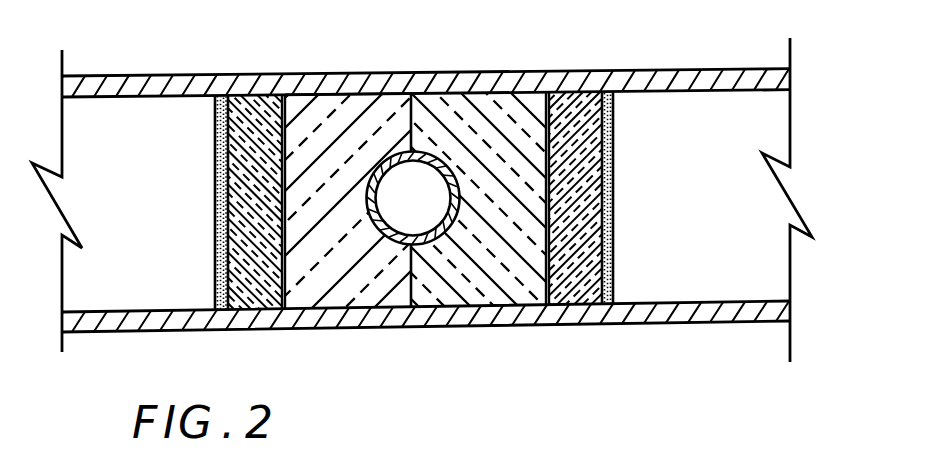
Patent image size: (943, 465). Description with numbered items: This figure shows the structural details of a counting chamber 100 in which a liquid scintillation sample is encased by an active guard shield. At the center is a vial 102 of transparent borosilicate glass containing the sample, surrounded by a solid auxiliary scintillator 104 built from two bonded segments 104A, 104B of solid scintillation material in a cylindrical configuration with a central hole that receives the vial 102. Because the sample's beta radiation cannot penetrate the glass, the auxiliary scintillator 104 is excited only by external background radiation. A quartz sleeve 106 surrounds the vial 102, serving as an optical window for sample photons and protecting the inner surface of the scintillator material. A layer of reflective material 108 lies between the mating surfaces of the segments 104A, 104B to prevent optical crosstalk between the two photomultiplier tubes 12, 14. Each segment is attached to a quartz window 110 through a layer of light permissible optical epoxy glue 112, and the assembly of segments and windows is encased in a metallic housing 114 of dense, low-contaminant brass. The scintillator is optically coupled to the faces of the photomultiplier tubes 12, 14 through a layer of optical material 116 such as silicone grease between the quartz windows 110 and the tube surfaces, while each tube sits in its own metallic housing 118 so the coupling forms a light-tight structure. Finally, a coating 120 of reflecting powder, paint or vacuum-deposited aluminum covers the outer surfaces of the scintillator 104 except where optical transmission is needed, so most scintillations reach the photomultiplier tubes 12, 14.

The counting chamber 100 is at (468, 342).
The vial 102 is at (441, 237).
The solid auxiliary scintillator 104 is at (308, 298).
The bonded segment 104A is at (372, 296).
The bonded segment 104B is at (530, 102).
The quartz sleeve 106 is at (455, 237).
The layer of reflective material 108 is at (410, 100).
The quartz window 110 is at (250, 301).
The layer of light permissible optical epoxy glue 112 is at (283, 107).
The metallic housing 114 is at (505, 72).
The layer of optical material 116 is at (219, 96).
The metallic housing 118 is at (77, 78).
The coating 120 is at (318, 95).
The photomultiplier tube 12 is at (125, 115).
The photomultiplier tube 14 is at (658, 102).